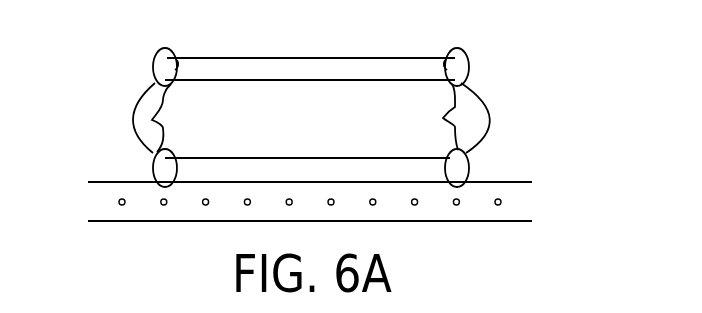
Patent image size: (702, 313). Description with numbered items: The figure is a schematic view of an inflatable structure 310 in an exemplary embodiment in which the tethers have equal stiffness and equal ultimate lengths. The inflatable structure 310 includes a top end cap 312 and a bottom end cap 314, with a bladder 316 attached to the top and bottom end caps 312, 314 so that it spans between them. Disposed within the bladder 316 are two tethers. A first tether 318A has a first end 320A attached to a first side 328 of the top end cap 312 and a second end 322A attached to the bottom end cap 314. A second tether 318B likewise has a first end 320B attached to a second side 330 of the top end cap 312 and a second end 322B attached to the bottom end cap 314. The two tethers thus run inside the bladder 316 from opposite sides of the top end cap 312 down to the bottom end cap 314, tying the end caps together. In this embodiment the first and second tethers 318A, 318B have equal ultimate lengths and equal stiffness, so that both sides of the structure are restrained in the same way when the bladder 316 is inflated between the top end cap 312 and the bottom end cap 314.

The inflatable structure 310 is at (86, 256).
The top end cap 312 is at (265, 63).
The bottom end cap 314 is at (382, 173).
The bladder 316 is at (133, 116).
The first tether 318A is at (162, 128).
The second tether 318B is at (455, 107).
The first end of first tether 320A is at (163, 92).
The first end of second tether 320B is at (458, 90).
The second end of first tether 322A is at (157, 152).
The second end of second tether 322B is at (458, 147).
The first side of top end cap 328 is at (177, 62).
The second side of top end cap 330 is at (445, 63).